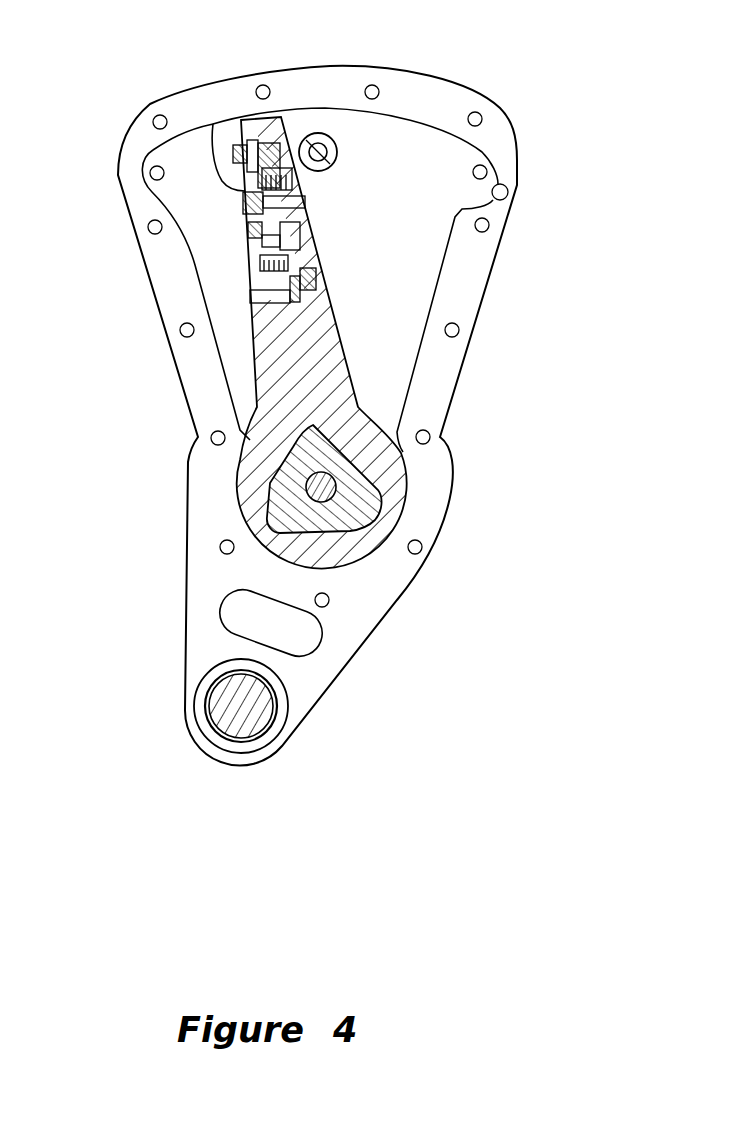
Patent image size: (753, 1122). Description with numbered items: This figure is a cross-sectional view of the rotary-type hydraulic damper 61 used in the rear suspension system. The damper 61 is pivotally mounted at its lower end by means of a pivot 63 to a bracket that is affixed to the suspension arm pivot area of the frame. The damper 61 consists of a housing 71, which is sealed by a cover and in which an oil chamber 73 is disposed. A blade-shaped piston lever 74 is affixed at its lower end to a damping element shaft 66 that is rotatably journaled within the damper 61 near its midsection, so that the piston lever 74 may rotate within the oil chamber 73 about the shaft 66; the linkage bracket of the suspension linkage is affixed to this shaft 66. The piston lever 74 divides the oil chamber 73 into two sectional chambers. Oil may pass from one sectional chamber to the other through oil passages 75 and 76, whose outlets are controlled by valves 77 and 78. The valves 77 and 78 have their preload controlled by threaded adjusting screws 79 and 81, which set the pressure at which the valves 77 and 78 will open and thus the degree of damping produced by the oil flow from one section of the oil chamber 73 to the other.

The hydraulic damper 61 is at (337, 419).
The pivot 63 is at (228, 720).
The damping element shaft 66 is at (357, 510).
The housing 71 is at (497, 252).
The oil chamber 73 is at (172, 160).
The piston lever 74 is at (357, 365).
The oil passage 75 is at (302, 150).
The oil passage 76 is at (243, 285).
The valve 77 is at (246, 146).
The valve 78 is at (305, 306).
The threaded adjusting screw 79 is at (245, 191).
The threaded adjusting screw 81 is at (318, 265).